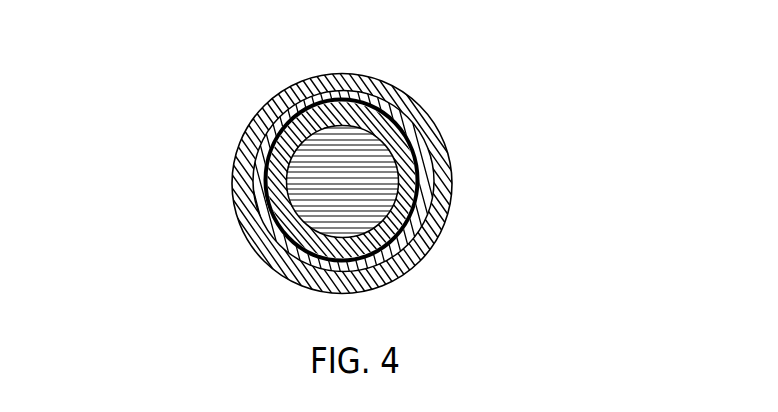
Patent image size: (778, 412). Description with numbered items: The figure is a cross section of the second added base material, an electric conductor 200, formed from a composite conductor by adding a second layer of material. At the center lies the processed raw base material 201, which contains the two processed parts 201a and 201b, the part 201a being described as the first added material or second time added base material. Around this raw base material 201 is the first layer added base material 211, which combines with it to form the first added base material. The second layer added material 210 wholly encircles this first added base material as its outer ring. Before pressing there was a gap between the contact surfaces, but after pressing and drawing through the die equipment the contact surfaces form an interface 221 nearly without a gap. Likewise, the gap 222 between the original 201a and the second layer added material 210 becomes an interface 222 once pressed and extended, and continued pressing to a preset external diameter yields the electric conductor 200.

The second added base material (electric conductor) 200 is at (222, 106).
The raw base material 201 is at (444, 131).
The first added material 201a is at (355, 143).
The processed raw base material part 201b is at (393, 150).
The second layer added material 210 is at (437, 205).
The first layer added base material 211 is at (440, 167).
The interface 221 is at (263, 188).
The interface 222 is at (258, 229).